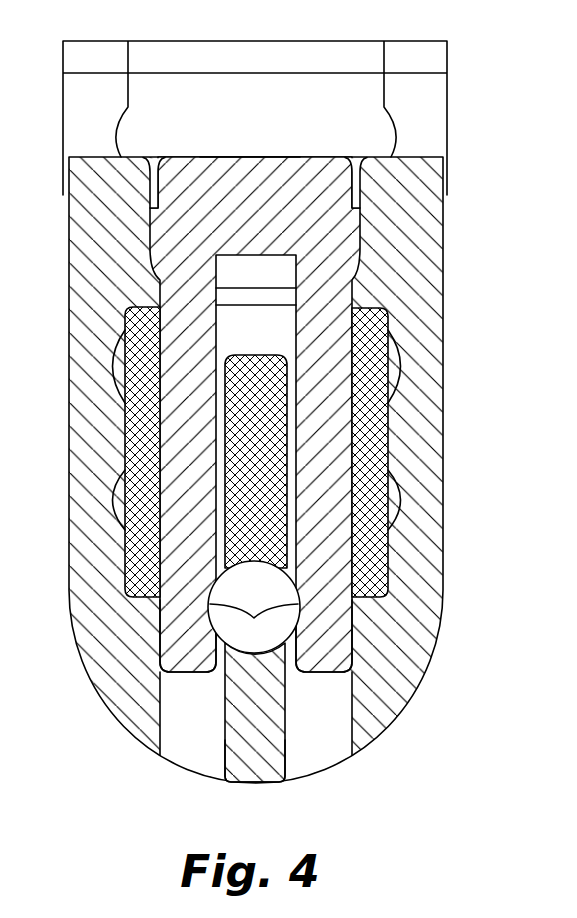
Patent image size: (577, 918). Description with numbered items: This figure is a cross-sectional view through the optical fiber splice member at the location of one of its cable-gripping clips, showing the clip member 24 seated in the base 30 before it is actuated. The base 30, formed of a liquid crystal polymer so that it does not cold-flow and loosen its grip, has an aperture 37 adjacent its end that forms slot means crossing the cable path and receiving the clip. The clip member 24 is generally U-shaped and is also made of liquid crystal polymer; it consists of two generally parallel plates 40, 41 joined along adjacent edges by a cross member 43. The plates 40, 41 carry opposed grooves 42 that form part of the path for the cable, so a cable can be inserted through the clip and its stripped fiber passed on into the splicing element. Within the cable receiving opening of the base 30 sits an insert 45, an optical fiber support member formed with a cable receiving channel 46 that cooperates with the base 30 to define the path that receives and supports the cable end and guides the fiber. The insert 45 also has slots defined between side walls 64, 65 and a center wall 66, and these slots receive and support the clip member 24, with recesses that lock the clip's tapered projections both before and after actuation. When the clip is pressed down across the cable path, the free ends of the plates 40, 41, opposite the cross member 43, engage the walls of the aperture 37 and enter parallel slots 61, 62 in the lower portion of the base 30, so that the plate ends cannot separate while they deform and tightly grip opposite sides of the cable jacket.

The clip member 24 is at (243, 156).
The base 30 is at (454, 236).
The aperture 37 is at (130, 99).
The plate 40 is at (325, 616).
The plate 41 is at (183, 618).
The groove 42 is at (255, 706).
The cross member 43 is at (272, 160).
The insert 45 is at (390, 417).
The cable receiving channel 46 is at (262, 565).
The parallel slot 61 is at (160, 730).
The parallel slot 62 is at (256, 770).
The side wall 64 is at (125, 428).
The side wall 65 is at (388, 426).
The center wall 66 is at (258, 372).